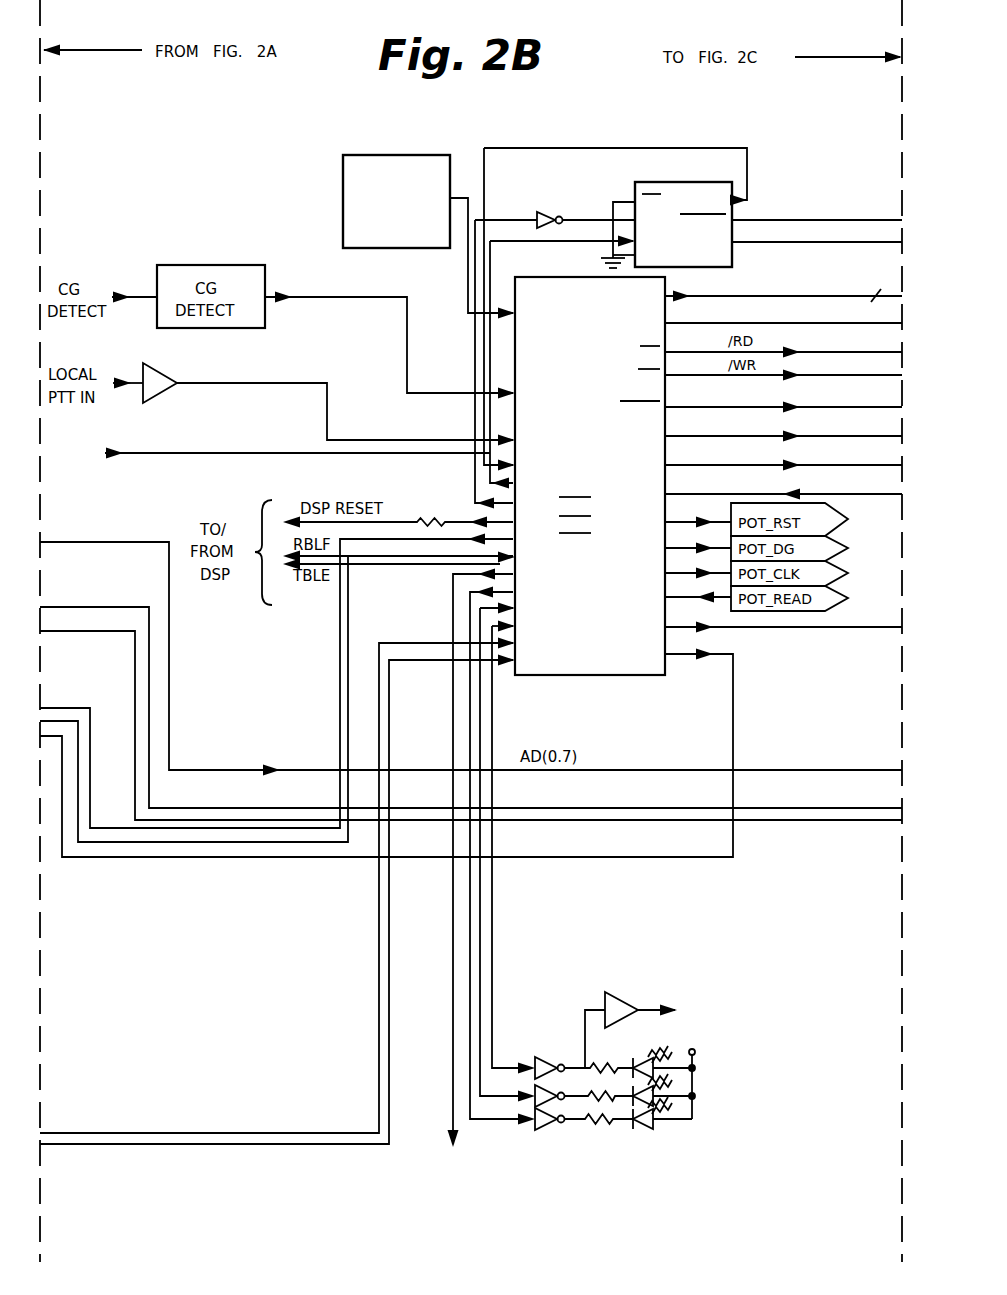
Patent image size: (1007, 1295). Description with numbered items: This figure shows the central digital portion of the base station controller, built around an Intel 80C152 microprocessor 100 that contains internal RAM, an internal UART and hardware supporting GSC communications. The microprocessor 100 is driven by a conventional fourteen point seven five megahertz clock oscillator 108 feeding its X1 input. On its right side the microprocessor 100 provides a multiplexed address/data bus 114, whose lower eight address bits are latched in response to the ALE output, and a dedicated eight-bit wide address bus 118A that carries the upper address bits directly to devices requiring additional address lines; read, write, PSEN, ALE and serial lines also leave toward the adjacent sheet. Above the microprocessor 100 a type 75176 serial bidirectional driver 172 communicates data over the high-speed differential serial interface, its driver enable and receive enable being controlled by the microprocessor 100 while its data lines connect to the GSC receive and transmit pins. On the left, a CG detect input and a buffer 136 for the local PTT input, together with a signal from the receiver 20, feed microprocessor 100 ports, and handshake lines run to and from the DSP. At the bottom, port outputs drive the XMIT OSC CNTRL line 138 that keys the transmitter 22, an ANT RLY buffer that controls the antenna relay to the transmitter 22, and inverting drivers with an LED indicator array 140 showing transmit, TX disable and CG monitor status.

The receiver 20 is at (269, 456).
The transmitter 22 is at (650, 1003).
The microprocessor 100 is at (573, 276).
The clock oscillator 108 is at (343, 200).
The multiplexed address/data bus 114 is at (783, 295).
The address bus 118A is at (783, 314).
The local PTT input buffer 136 is at (163, 374).
The XMIT OSC CNTRL line 138 is at (453, 1105).
The LED indicator array 140 is at (636, 1143).
The serial bidirectional driver 172 is at (735, 266).